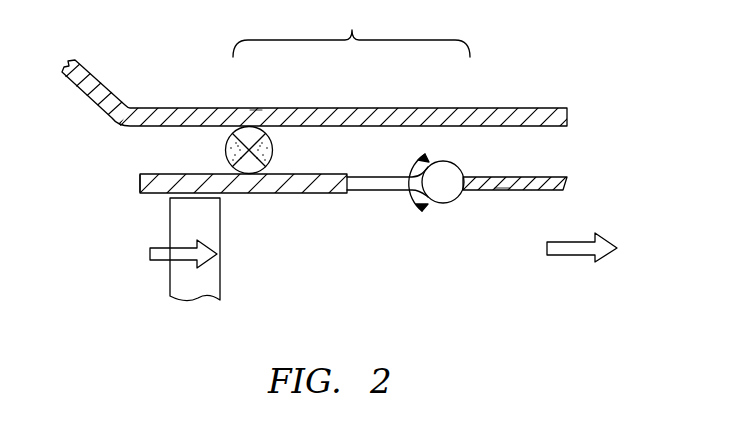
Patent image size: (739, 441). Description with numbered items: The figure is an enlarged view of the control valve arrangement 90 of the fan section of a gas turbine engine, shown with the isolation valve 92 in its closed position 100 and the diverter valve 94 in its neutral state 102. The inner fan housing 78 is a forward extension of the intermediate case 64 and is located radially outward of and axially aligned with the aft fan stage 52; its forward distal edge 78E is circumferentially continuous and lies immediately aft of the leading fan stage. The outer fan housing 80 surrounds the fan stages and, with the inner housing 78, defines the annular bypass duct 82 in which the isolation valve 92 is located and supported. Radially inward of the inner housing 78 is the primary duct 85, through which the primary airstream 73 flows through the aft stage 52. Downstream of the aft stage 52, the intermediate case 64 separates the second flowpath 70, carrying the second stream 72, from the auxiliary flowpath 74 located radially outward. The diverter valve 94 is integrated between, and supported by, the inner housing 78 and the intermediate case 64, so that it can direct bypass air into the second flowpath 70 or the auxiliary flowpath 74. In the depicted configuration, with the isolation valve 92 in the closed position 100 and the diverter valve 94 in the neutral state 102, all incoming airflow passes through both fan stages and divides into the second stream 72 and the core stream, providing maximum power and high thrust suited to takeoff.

The aft fan stage 52 is at (213, 278).
The intermediate case 64 is at (502, 190).
The second flowpath 70 is at (520, 295).
The second stream 72 is at (575, 241).
The primary airstream 73 is at (151, 262).
The auxiliary flowpath 74 is at (533, 162).
The inner fan housing 78 is at (257, 193).
The forward distal edge 78E is at (140, 183).
The outer fan housing 80 is at (122, 106).
The bypass duct 82 is at (202, 162).
The primary duct 85 is at (207, 231).
The control valve arrangement 90 is at (351, 29).
The isolation valve 92 is at (273, 150).
The diverter valve 94 is at (440, 204).
The closed position 100 is at (258, 114).
The neutral state 102 is at (370, 191).